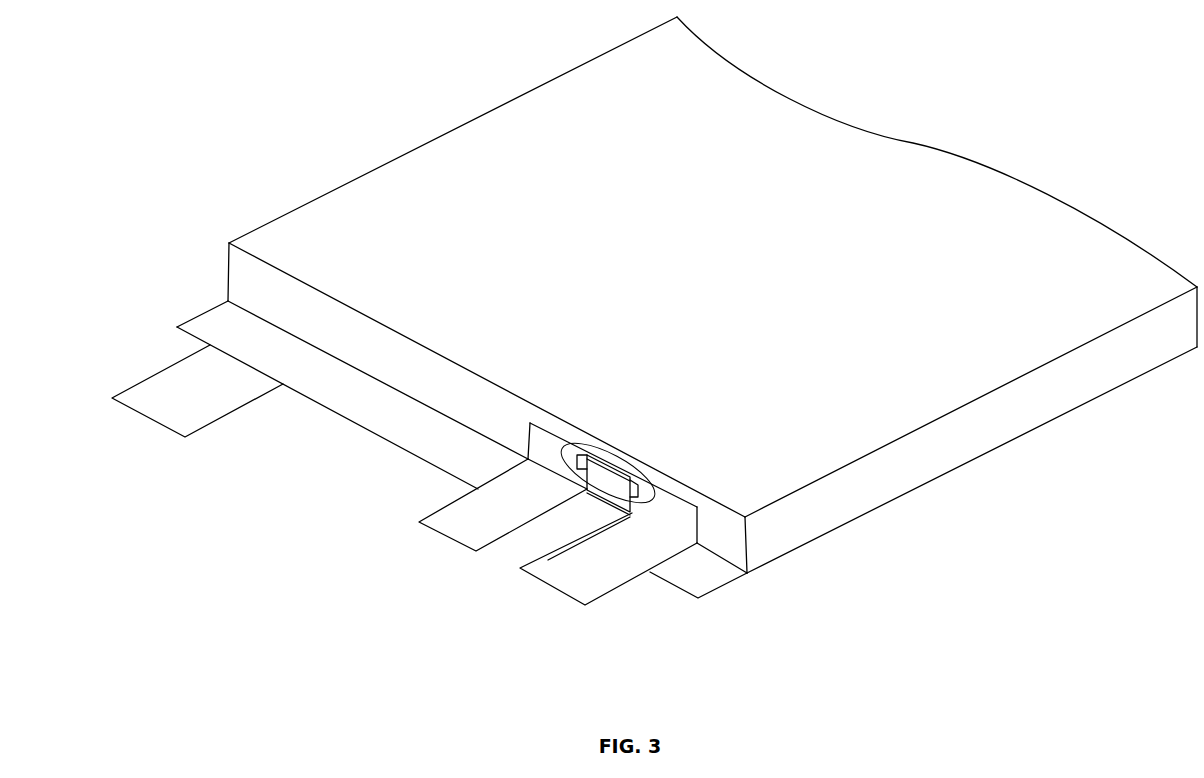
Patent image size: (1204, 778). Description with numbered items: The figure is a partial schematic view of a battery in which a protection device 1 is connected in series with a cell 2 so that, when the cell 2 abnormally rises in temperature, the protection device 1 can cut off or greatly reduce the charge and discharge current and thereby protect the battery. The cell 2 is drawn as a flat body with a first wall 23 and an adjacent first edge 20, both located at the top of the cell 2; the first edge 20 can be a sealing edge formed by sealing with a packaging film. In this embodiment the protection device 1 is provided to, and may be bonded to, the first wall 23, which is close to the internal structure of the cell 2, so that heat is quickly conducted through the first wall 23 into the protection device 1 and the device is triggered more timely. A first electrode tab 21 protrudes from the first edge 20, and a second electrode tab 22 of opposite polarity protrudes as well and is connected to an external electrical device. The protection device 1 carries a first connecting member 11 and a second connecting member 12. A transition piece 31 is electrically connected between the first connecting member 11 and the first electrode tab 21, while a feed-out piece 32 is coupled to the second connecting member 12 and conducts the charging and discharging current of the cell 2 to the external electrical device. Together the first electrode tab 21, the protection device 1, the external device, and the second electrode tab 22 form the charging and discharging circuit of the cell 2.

The protection device 1 is at (630, 432).
The first connecting member 11 is at (632, 500).
The second connecting member 12 is at (583, 463).
The cell 2 is at (452, 168).
The first edge 20 is at (217, 332).
The first electrode tab 21 is at (556, 577).
The second electrode tab 22 is at (147, 400).
The first wall 23 is at (250, 273).
The transition piece 31 is at (607, 575).
The feed-out piece 32 is at (455, 520).